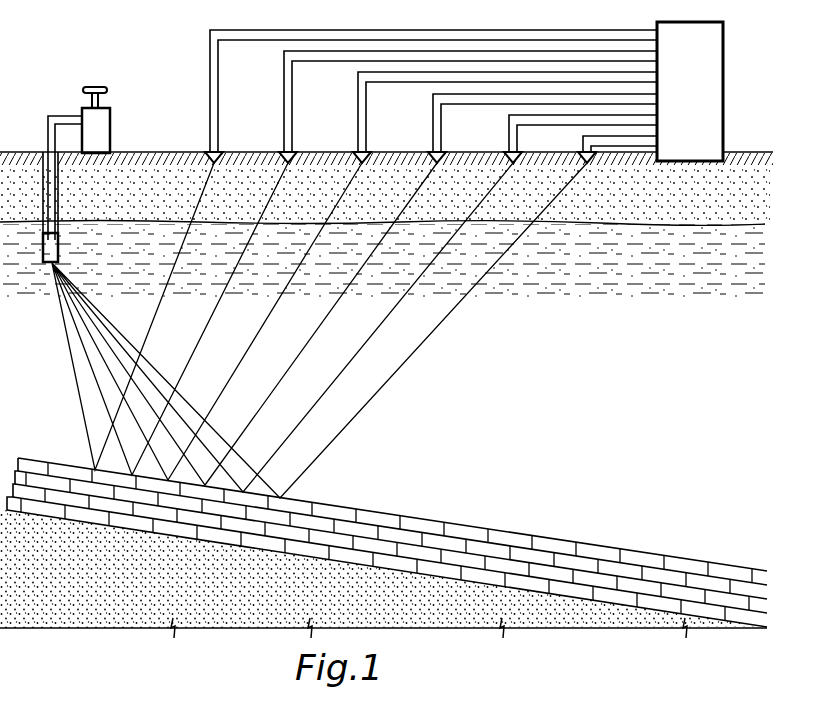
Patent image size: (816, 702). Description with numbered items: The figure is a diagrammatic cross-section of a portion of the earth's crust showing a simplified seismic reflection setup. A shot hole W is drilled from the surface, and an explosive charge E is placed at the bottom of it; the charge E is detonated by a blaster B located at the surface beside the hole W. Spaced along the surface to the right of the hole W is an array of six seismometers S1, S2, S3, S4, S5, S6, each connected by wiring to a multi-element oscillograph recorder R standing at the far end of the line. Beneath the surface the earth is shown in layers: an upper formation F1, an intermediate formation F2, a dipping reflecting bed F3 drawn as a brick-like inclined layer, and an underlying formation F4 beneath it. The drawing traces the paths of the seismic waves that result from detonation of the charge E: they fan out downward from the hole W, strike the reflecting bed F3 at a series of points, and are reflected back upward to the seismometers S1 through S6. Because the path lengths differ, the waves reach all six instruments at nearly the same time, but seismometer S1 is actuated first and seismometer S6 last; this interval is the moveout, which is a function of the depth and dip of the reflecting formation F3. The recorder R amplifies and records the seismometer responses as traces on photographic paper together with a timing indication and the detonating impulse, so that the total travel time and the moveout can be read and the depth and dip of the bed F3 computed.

The hole W is at (38, 167).
The blaster B is at (110, 127).
The charge E is at (43, 266).
The seismometer S1 is at (207, 152).
The seismometer S2 is at (281, 152).
The seismometer S3 is at (355, 152).
The seismometer S4 is at (430, 152).
The seismometer S5 is at (506, 152).
The seismometer S6 is at (580, 152).
The multi-element oscillograph recorder R is at (700, 94).
The formation F1 is at (690, 216).
The formation F2 is at (663, 349).
The reflecting bed F3 is at (625, 555).
The formation F4 is at (465, 616).